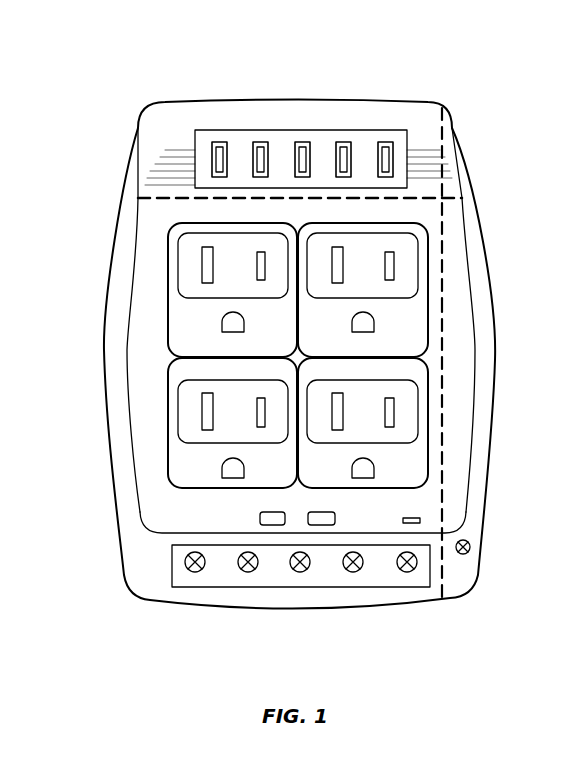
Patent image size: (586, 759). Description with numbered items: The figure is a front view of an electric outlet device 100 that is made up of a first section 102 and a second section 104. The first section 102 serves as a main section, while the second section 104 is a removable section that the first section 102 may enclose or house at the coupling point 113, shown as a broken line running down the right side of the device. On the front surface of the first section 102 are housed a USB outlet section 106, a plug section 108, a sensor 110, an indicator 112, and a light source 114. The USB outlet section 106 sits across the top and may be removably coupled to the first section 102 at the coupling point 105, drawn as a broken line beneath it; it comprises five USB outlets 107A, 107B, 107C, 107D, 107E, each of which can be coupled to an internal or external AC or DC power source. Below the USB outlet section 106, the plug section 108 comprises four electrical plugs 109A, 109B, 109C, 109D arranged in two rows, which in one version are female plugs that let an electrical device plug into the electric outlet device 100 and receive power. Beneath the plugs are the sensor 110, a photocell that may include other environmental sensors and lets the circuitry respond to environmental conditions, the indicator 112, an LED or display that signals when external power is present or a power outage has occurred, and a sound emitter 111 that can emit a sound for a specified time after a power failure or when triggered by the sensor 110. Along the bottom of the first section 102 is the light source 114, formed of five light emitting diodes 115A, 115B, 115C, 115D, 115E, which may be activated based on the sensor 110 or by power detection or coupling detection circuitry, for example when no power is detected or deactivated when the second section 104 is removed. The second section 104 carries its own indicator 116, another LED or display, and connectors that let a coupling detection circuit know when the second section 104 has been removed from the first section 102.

The electric outlet device 100 is at (105, 70).
The first section 102 is at (137, 353).
The second section 104 is at (457, 220).
The coupling point 105 is at (428, 192).
The USB outlet section 106 is at (308, 130).
The USB outlet 107A is at (216, 140).
The USB outlet 107B is at (258, 140).
The USB outlet 107C is at (303, 140).
The USB outlet 107D is at (343, 140).
The USB outlet 107E is at (385, 140).
The plug section 108 is at (448, 354).
The electrical plug 109A is at (428, 295).
The electrical plug 109B is at (168, 295).
The electrical plug 109C is at (168, 440).
The electrical plug 109D is at (428, 440).
The sensor 110 is at (325, 512).
The sound emitter 111 is at (411, 518).
The indicator 112 is at (272, 512).
The coupling point 113 is at (448, 136).
The light source 114 is at (320, 613).
The Light Emitting Diode 115A is at (186, 565).
The Light Emitting Diode 115B is at (245, 572).
The Light Emitting Diode 115C is at (300, 572).
The Light Emitting Diode 115D is at (355, 572).
The Light Emitting Diode 115E is at (410, 572).
The indicator 116 is at (470, 548).